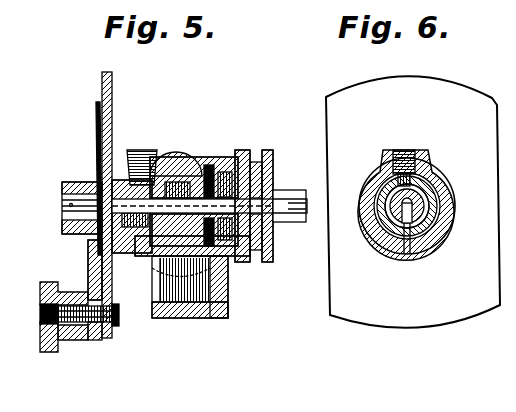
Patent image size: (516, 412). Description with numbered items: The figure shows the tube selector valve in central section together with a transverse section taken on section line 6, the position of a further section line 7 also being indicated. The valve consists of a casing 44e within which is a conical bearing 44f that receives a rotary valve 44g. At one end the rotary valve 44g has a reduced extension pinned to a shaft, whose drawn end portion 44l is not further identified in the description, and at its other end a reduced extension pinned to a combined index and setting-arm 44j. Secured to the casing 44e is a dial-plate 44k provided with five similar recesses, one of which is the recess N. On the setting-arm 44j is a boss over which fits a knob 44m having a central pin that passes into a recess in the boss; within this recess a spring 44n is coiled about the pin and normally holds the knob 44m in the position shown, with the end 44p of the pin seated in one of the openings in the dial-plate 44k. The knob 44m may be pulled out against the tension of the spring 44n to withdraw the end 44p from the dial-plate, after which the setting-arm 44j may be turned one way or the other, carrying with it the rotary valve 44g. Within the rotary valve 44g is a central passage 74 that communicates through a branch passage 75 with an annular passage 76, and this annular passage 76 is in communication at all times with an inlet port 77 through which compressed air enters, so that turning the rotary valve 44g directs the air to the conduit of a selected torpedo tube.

In FIG. 5, the dial-plate 44k is at (112, 84).
In FIG. 5, the inlet port 77 is at (130, 152).
In FIG. 6, the inlet port 77 is at (403, 150).
In FIG. 5, the adjusting screw 6 is at (137, 183).
In FIG. 5, the housing 7 is at (176, 156).
In FIG. 5, the conical bearing 44f is at (160, 155).
In FIG. 6, the conical bearing 44f is at (440, 232).
In FIG. 5, the rotary valve 44g is at (201, 160).
In FIG. 6, the rotary valve 44g is at (373, 243).
In FIG. 5, the casing 44e is at (211, 160).
In FIG. 6, the casing 44e is at (433, 172).
In FIG. 5, the shaft end 44l is at (292, 216).
In FIG. 5, the combined index and setting-arm 44j is at (88, 248).
In FIG. 5, the recess N is at (118, 314).
In FIG. 5, the knob 44m is at (45, 340).
In FIG. 5, the spring 44n is at (80, 336).
In FIG. 5, the end of the pin 44p is at (106, 340).
In FIG. 6, the central passage 74 is at (372, 180).
In FIG. 6, the branch passage 75 is at (418, 250).
In FIG. 6, the annular passage 76 is at (405, 254).